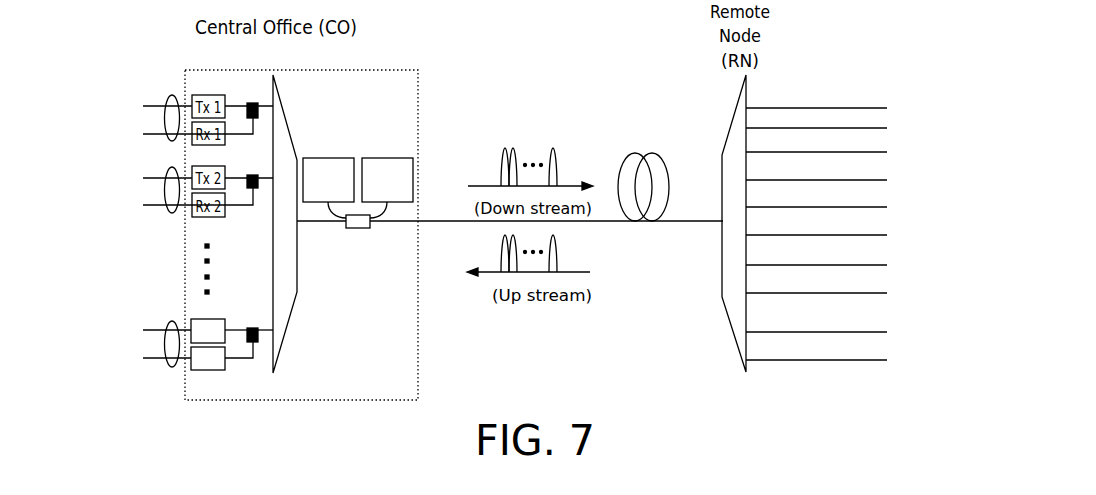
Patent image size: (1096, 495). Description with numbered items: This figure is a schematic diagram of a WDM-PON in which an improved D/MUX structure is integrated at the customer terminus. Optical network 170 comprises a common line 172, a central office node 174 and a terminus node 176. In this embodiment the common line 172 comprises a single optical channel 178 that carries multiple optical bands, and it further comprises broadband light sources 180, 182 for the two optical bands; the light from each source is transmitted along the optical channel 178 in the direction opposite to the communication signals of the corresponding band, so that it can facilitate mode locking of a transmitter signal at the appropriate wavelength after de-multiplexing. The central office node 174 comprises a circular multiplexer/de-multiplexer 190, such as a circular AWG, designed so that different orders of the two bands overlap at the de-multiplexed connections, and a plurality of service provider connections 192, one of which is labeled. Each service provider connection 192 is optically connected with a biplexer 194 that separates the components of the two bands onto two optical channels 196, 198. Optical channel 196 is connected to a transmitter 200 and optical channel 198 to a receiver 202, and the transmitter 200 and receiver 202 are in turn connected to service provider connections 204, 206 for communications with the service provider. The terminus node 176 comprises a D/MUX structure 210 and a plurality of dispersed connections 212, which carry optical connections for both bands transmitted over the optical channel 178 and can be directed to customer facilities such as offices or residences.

The optical network 170 is at (567, 356).
The common line 172 is at (443, 170).
The central office node 174 is at (312, 115).
The terminus node 176 is at (715, 120).
The optical channel 178 is at (432, 222).
The broadband light source 180 is at (343, 158).
The broadband light source 182 is at (403, 158).
The multiplexer/de-multiplexer 190 is at (294, 309).
The service provider connection 192 is at (258, 338).
The biplexer 194 is at (263, 328).
The optical channel 196 is at (248, 327).
The optical channel 198 is at (235, 358).
The transmitter 200 is at (197, 318).
The receiver 202 is at (200, 371).
The service provider connection 204 is at (150, 330).
The service provider connection 206 is at (150, 358).
The D/MUX structure 210 is at (722, 283).
The dispersed connections 212 is at (822, 98).